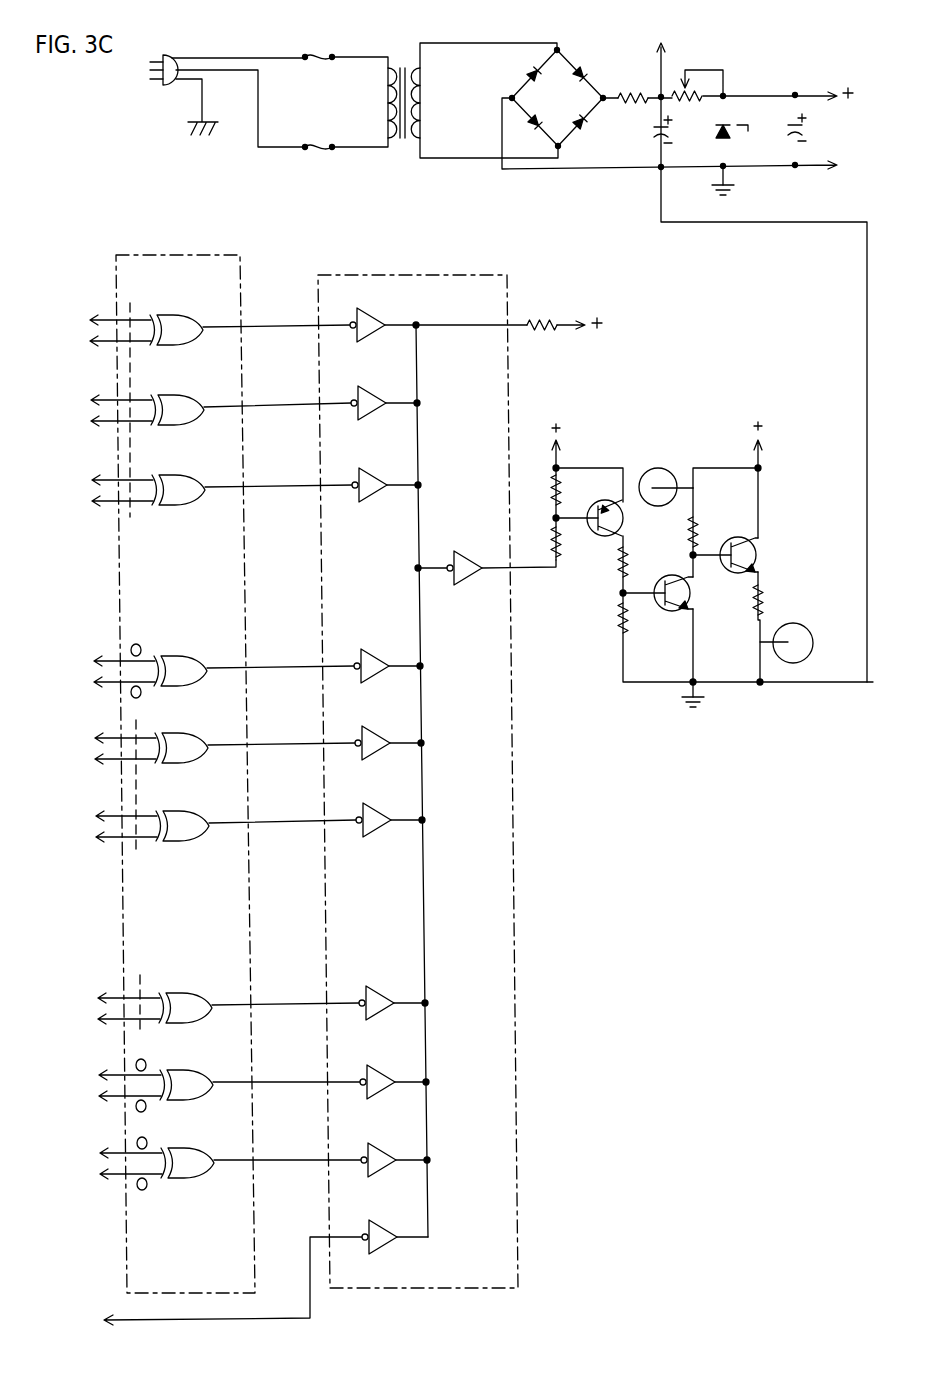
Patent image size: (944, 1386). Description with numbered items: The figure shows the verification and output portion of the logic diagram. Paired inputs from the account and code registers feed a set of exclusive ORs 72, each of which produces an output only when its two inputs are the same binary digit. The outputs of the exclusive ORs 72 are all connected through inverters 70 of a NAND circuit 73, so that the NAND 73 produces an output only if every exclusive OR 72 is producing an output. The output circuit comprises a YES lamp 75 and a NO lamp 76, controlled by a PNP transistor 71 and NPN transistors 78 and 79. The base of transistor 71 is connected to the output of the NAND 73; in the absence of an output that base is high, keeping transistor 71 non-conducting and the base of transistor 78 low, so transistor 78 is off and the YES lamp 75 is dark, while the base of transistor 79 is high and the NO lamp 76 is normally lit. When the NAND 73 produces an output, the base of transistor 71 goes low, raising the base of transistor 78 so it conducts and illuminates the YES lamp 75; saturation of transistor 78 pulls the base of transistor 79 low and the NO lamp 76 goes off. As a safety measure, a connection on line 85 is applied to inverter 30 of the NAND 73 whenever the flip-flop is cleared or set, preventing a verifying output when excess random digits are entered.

The inverter 30 is at (384, 1242).
The inverter 70 is at (367, 325).
The PNP transistor 71 is at (601, 539).
The exclusive OR 72 is at (133, 290).
The NAND circuit 73 is at (488, 708).
The YES lamp 75 is at (672, 481).
The NO lamp 76 is at (796, 625).
The NPN transistor 78 is at (676, 612).
The NPN transistor 79 is at (746, 576).
The line 85 is at (262, 1318).